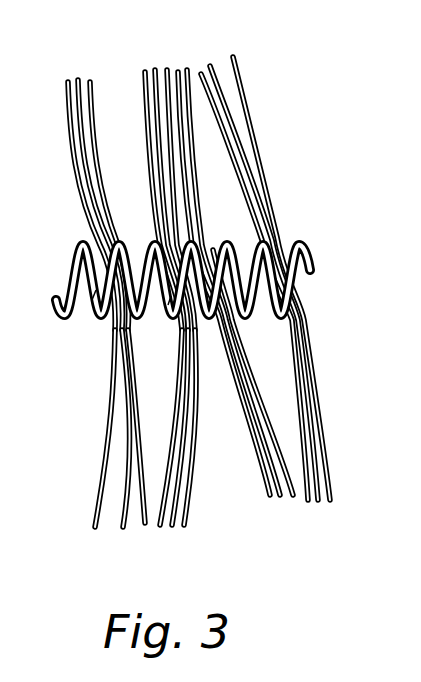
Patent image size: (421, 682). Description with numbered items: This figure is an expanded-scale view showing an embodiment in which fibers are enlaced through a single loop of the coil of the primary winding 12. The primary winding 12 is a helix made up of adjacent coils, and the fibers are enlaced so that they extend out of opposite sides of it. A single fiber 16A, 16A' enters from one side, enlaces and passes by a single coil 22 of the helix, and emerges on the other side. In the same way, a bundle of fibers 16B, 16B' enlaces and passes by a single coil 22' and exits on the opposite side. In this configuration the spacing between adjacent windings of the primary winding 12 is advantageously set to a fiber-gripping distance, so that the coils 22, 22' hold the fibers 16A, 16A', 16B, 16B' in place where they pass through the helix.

The primary winding 12 is at (315, 247).
The fiber 16A' is at (88, 179).
The bundle of fibers 16B' is at (161, 175).
The fiber 16A is at (119, 454).
The bundle of fibers 16B is at (182, 454).
The coil 22 is at (70, 327).
The coil 22' is at (118, 347).